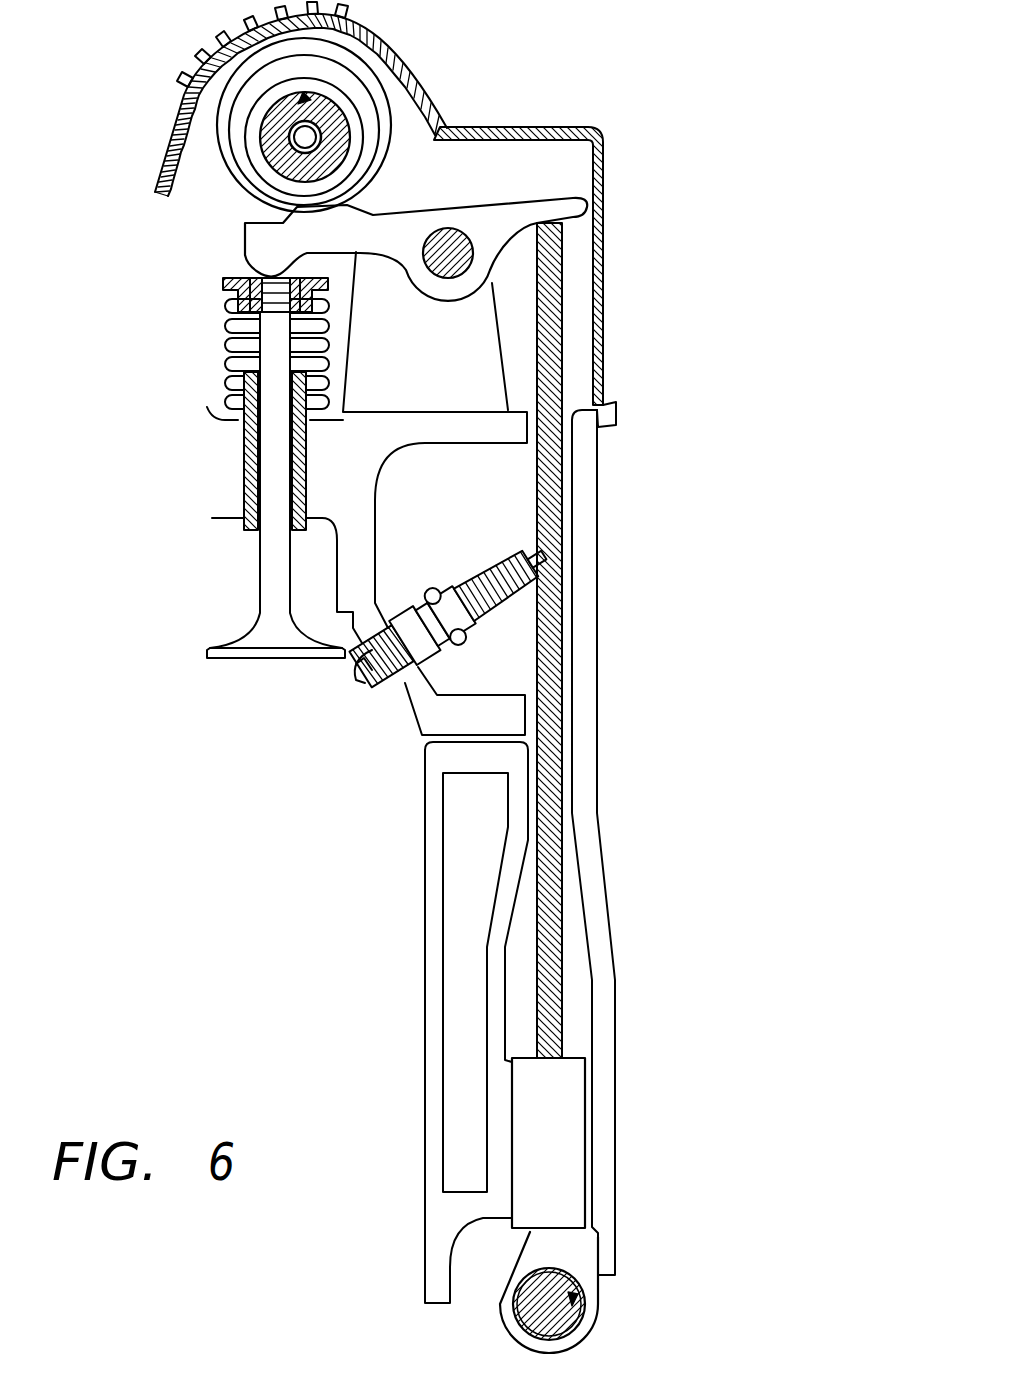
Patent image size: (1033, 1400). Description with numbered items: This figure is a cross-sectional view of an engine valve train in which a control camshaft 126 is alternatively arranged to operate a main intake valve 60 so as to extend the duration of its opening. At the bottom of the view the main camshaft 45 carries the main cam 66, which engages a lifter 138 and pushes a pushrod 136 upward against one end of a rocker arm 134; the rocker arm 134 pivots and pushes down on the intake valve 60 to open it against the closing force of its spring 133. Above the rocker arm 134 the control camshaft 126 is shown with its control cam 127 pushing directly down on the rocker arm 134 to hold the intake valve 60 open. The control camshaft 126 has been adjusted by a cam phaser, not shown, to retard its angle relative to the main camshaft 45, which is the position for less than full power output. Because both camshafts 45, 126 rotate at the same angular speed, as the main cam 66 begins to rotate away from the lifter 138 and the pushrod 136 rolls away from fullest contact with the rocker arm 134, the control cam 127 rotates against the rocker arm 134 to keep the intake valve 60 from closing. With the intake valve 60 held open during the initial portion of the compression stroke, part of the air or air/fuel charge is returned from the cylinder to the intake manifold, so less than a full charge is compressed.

The control camshaft 126 is at (308, 134).
The control cam 127 is at (360, 168).
The rocker arm 134 is at (260, 249).
The spring 133 is at (228, 346).
The main intake valve 60 is at (270, 588).
The pushrod 136 is at (555, 666).
The lifter 138 is at (557, 1117).
The main cam 66 is at (555, 1252).
The main camshaft 45 is at (580, 1330).